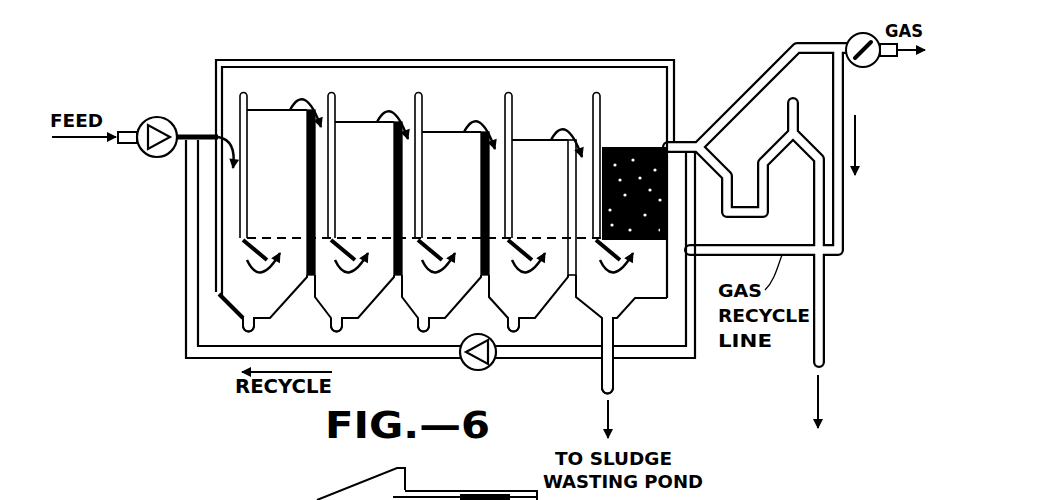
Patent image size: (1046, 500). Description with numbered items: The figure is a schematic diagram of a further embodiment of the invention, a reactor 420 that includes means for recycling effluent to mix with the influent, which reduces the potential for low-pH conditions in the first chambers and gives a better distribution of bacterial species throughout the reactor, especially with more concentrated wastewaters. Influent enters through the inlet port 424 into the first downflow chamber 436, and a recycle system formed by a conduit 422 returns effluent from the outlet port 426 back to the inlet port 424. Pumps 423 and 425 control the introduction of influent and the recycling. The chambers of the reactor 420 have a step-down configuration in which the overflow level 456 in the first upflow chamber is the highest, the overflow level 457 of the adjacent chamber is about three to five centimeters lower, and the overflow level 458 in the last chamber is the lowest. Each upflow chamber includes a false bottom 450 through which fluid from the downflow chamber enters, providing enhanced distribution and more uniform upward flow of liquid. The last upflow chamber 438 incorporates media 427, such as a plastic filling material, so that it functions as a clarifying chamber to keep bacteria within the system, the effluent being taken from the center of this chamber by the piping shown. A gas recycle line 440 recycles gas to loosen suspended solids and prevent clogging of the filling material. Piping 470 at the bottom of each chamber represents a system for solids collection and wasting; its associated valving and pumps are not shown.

The reactor 420 is at (636, 26).
The conduit 422 is at (693, 360).
The pump 423 is at (153, 117).
The inlet port 424 is at (203, 130).
The pump 425 is at (476, 371).
The outlet port 426 is at (796, 230).
The media 427 is at (661, 219).
The first downflow chamber 436 is at (278, 92).
The last upflow chamber 438 is at (656, 104).
The gas recycle line 440 is at (845, 205).
The false bottom 450 is at (284, 238).
The overflow level 456 is at (280, 110).
The overflow level 457 is at (374, 122).
The overflow level 458 is at (618, 148).
The piping 470 is at (635, 388).